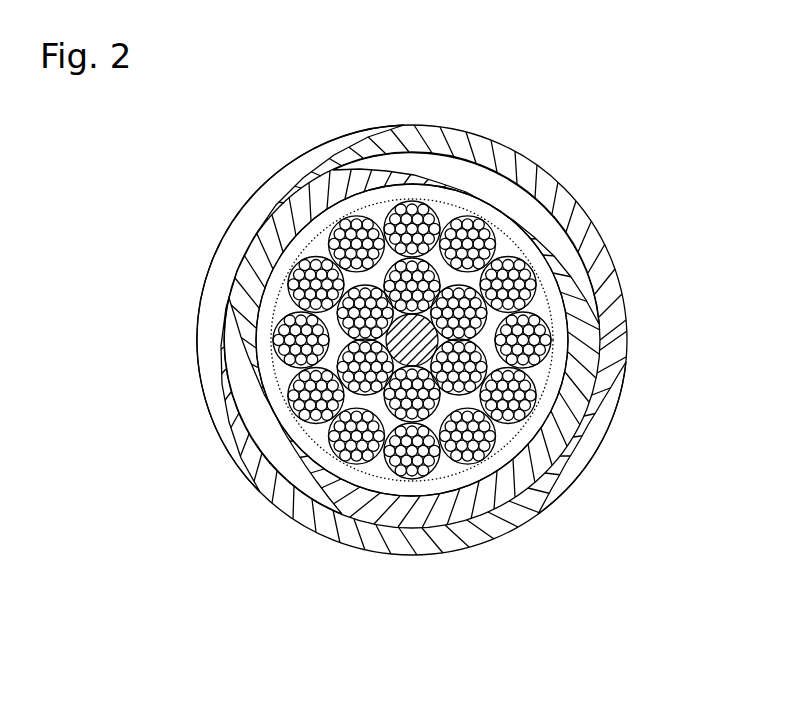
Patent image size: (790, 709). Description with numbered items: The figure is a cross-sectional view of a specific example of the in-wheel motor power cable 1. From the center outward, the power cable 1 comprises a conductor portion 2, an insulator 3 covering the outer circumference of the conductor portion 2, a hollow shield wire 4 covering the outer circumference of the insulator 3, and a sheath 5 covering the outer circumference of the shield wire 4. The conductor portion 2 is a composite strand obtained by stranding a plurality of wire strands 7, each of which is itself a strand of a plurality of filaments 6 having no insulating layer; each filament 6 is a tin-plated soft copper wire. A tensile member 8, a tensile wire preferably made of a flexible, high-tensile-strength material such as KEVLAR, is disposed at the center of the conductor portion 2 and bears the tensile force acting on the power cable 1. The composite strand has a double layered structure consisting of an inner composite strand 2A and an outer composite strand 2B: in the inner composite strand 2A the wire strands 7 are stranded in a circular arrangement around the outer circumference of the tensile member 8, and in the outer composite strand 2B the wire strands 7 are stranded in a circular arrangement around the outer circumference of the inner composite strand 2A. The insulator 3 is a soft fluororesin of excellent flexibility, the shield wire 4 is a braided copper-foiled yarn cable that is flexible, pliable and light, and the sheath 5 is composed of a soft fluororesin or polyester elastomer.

The power cable 1 is at (278, 160).
The conductor portion 2 is at (493, 229).
The inner composite strand 2A is at (355, 462).
The outer composite strand 2B is at (470, 520).
The insulator 3 is at (560, 307).
The shield wire 4 is at (575, 402).
The sheath 5 is at (552, 480).
The filament 6 is at (275, 298).
The wire strand 7 is at (280, 266).
The tensile member 8 is at (300, 392).